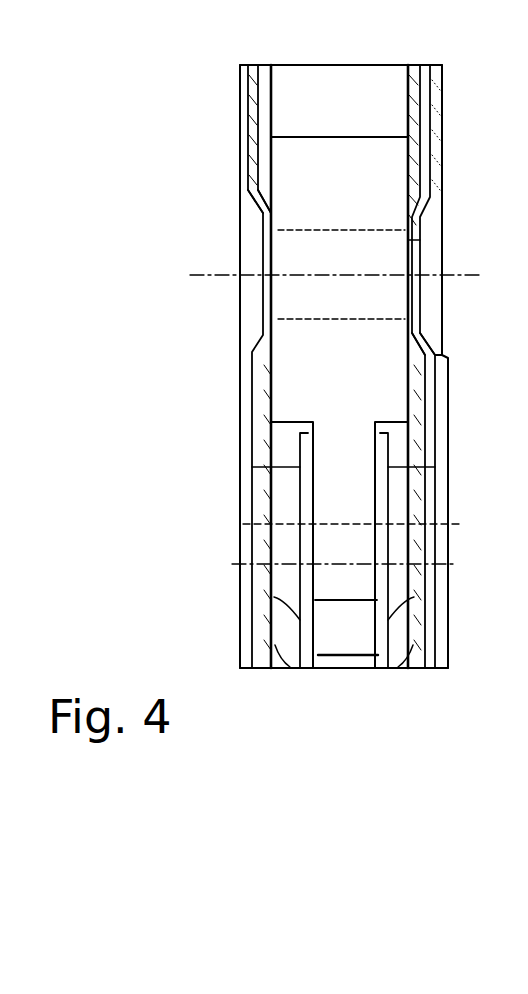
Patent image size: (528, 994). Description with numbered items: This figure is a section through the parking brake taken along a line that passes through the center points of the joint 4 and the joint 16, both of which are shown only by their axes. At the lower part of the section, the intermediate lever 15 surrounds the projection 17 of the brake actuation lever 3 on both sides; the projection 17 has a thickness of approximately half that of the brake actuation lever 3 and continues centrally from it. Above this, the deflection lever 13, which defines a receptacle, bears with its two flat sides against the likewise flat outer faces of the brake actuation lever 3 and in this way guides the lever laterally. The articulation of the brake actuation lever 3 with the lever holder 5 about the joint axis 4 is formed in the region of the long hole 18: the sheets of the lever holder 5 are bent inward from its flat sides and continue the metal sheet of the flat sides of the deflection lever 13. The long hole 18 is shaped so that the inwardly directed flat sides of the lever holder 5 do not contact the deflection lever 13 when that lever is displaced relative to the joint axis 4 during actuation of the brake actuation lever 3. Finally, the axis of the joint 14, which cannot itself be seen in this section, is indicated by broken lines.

The brake actuation lever 3 is at (328, 152).
The joint 4 is at (478, 275).
The lever holder 5 is at (443, 100).
The deflection lever 13 is at (413, 417).
The joint 14 is at (243, 520).
The intermediate lever 15 is at (400, 506).
The joint 16 is at (453, 563).
The projection 17 is at (360, 645).
The long hole 18 is at (263, 183).